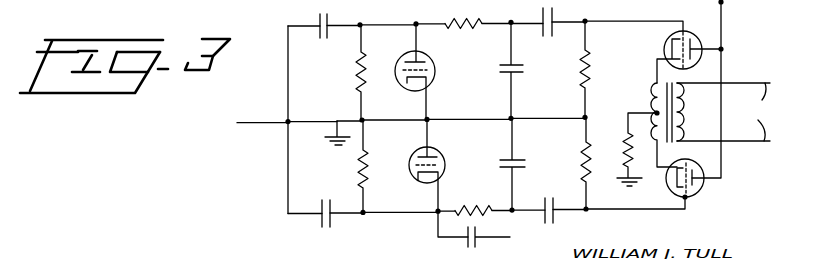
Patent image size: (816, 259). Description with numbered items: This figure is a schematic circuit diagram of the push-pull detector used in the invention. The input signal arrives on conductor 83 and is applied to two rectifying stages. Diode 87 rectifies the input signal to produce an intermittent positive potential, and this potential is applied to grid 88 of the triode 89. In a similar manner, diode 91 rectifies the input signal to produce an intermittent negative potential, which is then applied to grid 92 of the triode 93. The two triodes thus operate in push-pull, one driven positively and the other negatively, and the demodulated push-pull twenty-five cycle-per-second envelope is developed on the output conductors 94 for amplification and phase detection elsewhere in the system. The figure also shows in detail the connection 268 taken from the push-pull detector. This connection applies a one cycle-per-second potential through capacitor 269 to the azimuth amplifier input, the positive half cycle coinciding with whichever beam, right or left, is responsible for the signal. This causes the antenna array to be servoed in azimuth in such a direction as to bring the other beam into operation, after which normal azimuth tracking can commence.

The conductor 83 is at (263, 123).
The diode 91 is at (436, 67).
The diode 87 is at (445, 158).
The grid 92 is at (700, 28).
The triode 93 is at (664, 50).
The output conductors 94 is at (723, 112).
The grid 88 is at (690, 197).
The triode 89 is at (702, 182).
The connection 268 is at (438, 231).
The capacitor 269 is at (467, 243).